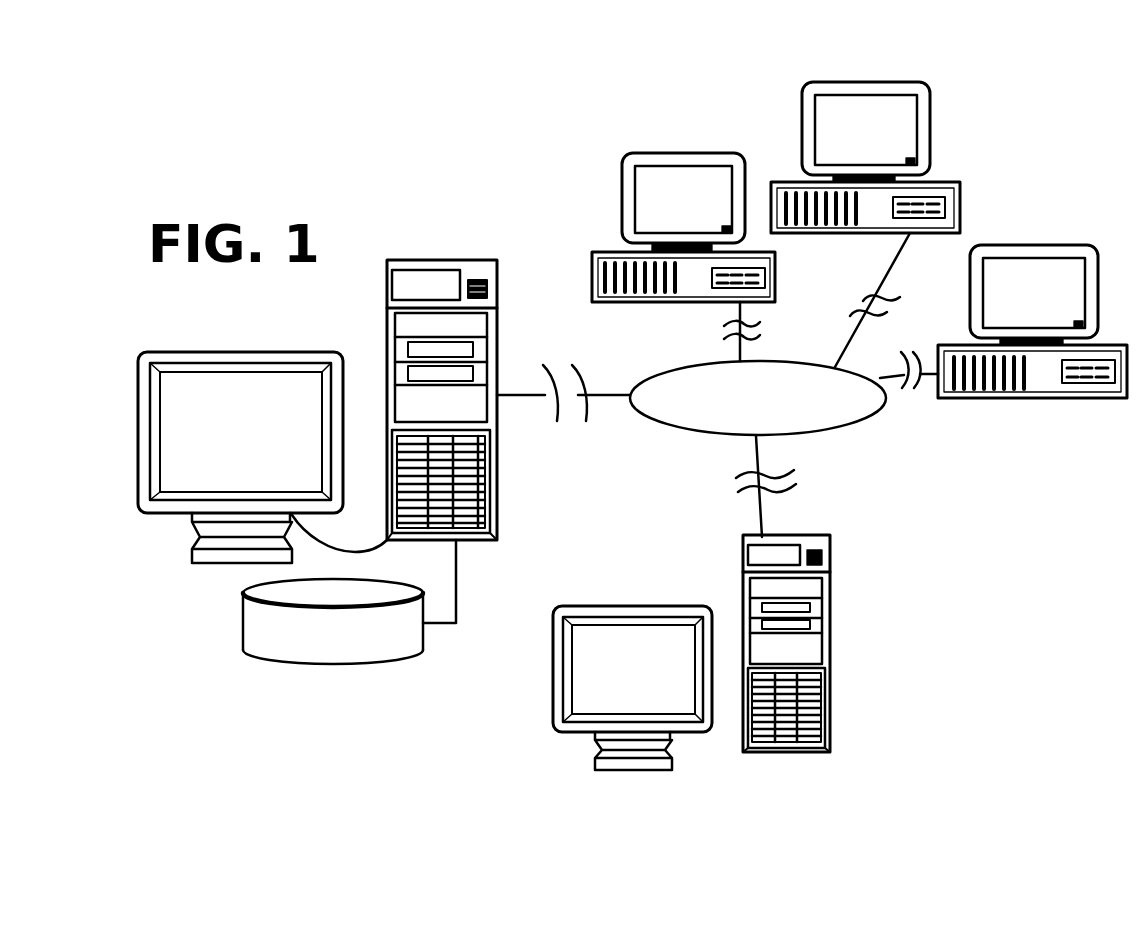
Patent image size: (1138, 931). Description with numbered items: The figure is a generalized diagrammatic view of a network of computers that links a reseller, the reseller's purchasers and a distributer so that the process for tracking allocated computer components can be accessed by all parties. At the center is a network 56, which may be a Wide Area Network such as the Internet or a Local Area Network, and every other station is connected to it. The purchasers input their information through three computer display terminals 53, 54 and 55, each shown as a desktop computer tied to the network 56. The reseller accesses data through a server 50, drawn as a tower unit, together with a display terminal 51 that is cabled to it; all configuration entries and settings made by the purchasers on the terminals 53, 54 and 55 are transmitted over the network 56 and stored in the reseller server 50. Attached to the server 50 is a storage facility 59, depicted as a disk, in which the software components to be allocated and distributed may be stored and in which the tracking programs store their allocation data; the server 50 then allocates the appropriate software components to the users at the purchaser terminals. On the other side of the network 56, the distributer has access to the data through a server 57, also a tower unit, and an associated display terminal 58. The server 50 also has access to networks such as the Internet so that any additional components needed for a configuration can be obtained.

The reseller server 50 is at (387, 277).
The display terminal 51 is at (138, 503).
The computer display terminal 53 is at (682, 150).
The computer display terminal 54 is at (850, 82).
The computer display terminal 55 is at (1002, 386).
The network 56 is at (700, 422).
The distributer server 57 is at (830, 660).
The display terminal 58 is at (595, 762).
The storage facility 59 is at (330, 637).